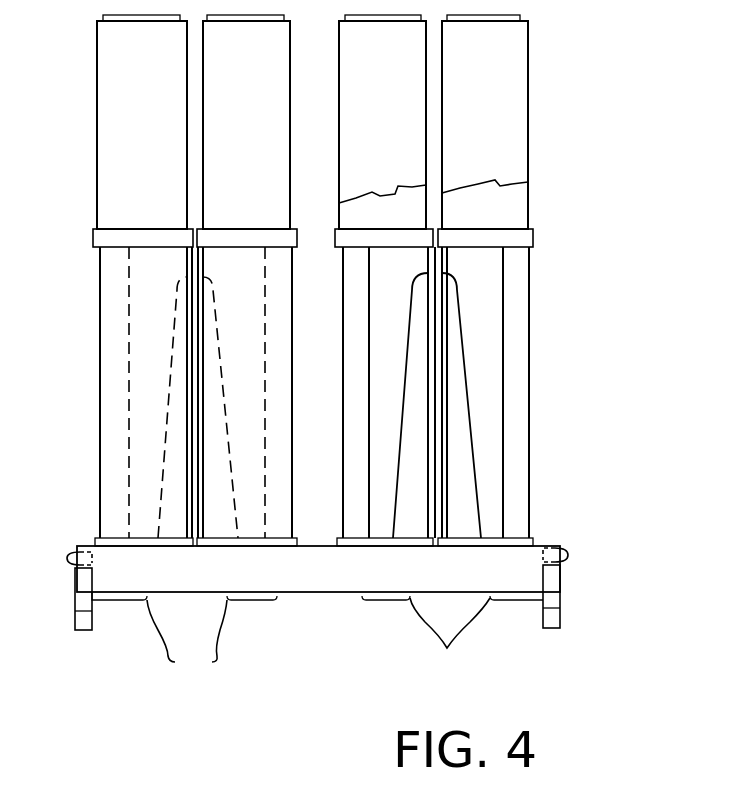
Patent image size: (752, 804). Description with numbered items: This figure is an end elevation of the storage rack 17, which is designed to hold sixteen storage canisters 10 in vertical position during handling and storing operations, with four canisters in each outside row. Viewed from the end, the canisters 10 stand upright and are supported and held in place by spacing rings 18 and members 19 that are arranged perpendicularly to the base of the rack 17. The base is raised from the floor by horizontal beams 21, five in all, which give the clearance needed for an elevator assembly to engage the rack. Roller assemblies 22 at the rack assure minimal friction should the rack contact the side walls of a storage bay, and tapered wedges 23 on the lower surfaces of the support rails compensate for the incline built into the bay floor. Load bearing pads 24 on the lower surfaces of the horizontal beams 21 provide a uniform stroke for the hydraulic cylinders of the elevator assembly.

The storage canister 10 is at (153, 124).
The storage rack 17 is at (603, 443).
The spacing ring 18 is at (534, 232).
The member 19 is at (128, 350).
The horizontal beam 21 is at (307, 592).
The roller assembly 22 is at (67, 558).
The tapered wedge 23 is at (82, 630).
The load bearing pad 24 is at (318, 640).